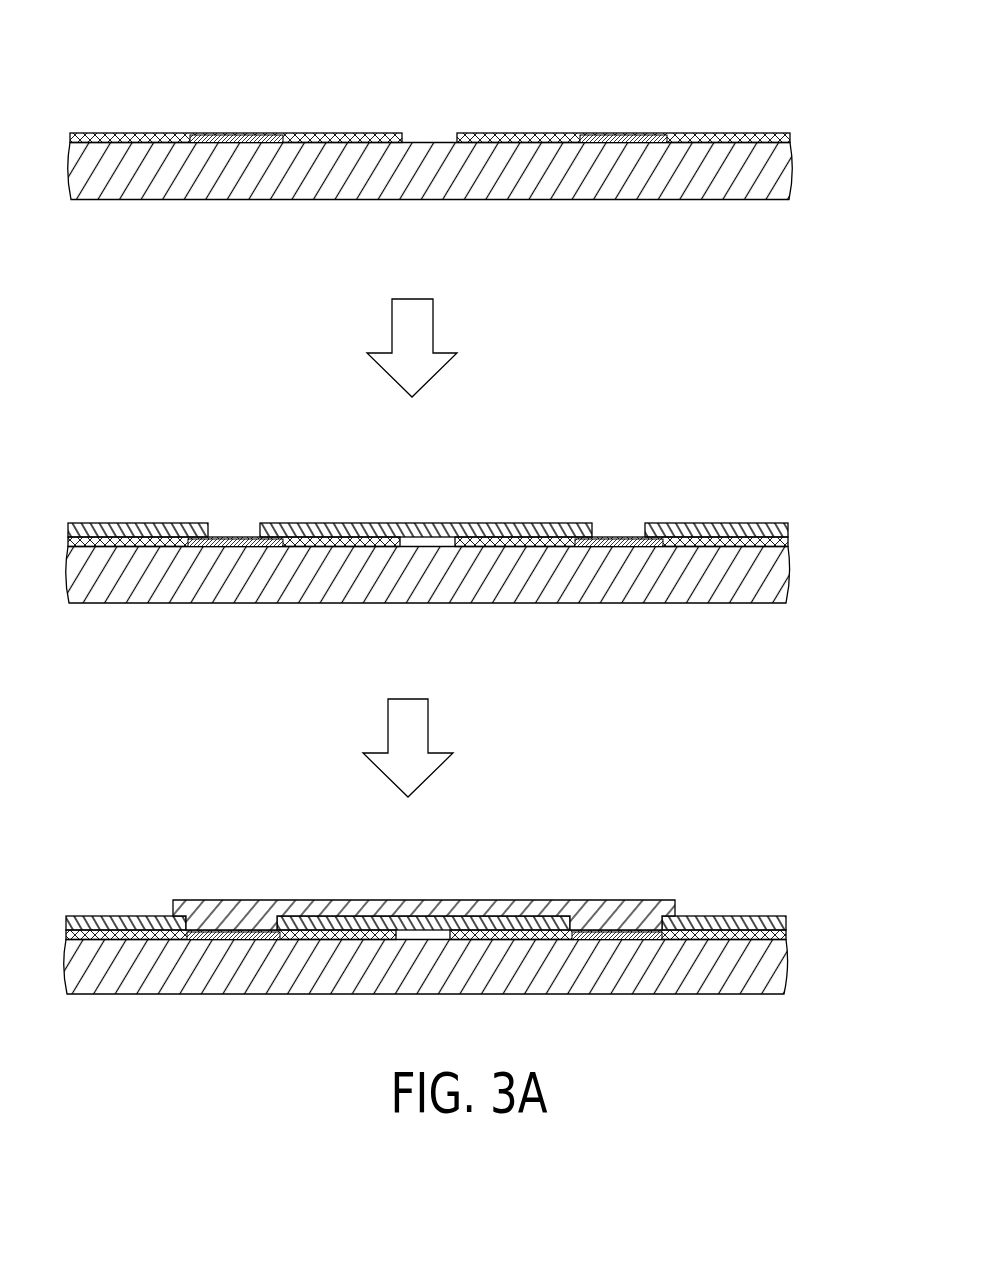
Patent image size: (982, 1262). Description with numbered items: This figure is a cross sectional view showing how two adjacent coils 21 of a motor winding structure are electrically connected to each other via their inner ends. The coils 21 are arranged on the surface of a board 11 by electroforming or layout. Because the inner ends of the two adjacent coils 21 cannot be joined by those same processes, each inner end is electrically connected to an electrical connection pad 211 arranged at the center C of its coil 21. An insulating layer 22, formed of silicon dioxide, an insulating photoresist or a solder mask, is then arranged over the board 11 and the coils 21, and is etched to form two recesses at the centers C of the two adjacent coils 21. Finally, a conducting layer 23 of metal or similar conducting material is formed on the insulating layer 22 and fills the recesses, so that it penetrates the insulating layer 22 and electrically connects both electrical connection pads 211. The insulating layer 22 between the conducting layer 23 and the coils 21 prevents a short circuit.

The board 11 is at (647, 188).
The coil 21 is at (131, 133).
The electrical connection pad 211 is at (272, 133).
The insulating layer 22 is at (773, 524).
The conducting layer 23 is at (607, 908).
The center of the coil C is at (232, 123).